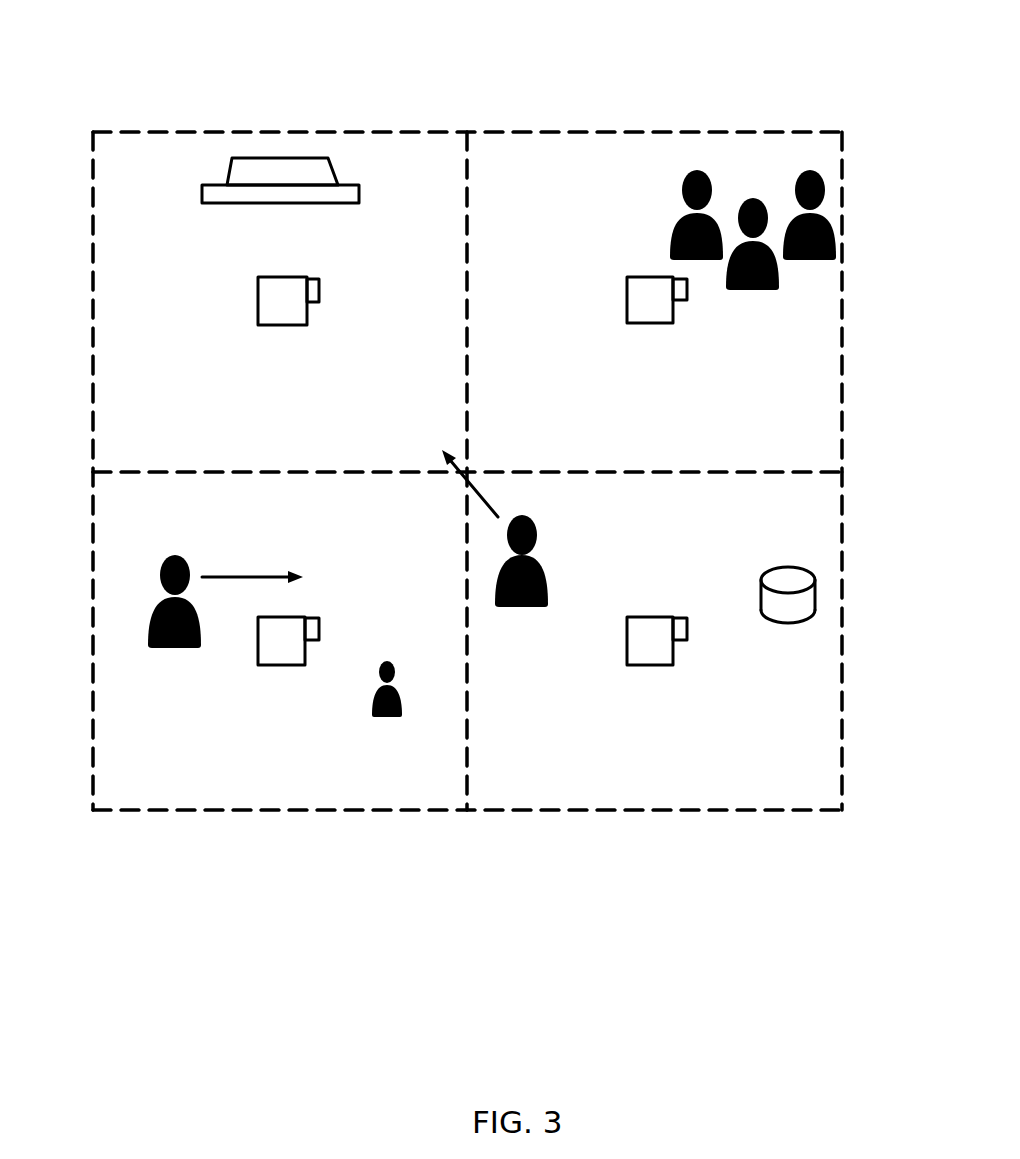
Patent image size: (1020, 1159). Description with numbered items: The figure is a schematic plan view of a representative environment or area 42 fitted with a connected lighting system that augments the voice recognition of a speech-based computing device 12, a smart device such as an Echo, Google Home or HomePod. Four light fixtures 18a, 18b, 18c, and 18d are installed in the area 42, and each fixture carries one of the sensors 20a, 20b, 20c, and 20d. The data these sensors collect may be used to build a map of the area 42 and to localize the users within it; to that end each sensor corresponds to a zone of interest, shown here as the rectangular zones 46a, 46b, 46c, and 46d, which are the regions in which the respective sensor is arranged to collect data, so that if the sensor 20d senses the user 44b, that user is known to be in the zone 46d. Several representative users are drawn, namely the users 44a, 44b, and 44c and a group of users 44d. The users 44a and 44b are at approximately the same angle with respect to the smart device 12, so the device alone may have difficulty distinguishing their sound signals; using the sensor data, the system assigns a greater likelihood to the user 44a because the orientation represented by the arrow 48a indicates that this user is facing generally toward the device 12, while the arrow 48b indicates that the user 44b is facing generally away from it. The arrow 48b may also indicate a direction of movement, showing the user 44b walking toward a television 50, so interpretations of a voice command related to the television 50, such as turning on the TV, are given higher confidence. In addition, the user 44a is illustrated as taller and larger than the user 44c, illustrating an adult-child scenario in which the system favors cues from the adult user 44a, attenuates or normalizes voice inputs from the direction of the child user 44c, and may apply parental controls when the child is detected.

The speech-based computing device 12 is at (788, 615).
The light fixture 18a is at (258, 302).
The light fixture 18b is at (627, 288).
The light fixture 18c is at (277, 660).
The light fixture 18d is at (650, 660).
The sensor 20a is at (319, 283).
The sensor 20b is at (687, 295).
The sensor 20c is at (318, 640).
The sensor 20d is at (682, 633).
The area 42 is at (682, 132).
The user 44a is at (175, 690).
The user 44b is at (572, 518).
The user 44c is at (387, 755).
The group of users 44d is at (640, 203).
The zone 46a is at (218, 390).
The zone 46b is at (560, 360).
The zone 46c is at (422, 558).
The zone 46d is at (568, 718).
The arrow 48a is at (272, 577).
The arrow 48b is at (477, 485).
The television 50 is at (270, 163).